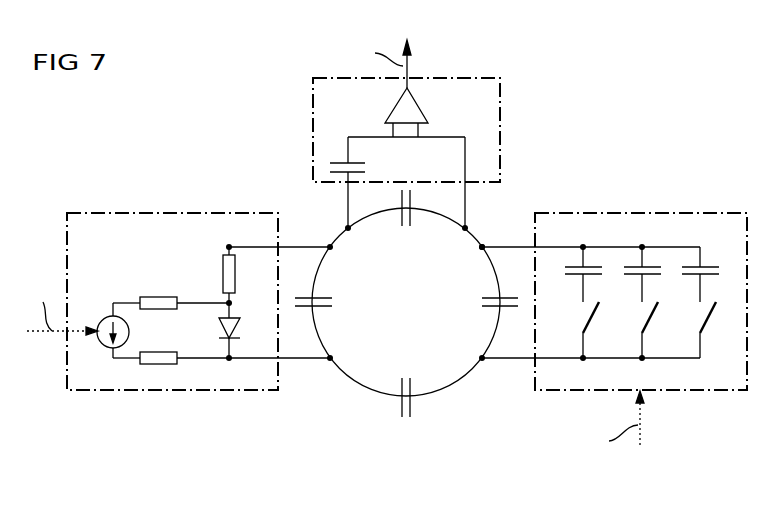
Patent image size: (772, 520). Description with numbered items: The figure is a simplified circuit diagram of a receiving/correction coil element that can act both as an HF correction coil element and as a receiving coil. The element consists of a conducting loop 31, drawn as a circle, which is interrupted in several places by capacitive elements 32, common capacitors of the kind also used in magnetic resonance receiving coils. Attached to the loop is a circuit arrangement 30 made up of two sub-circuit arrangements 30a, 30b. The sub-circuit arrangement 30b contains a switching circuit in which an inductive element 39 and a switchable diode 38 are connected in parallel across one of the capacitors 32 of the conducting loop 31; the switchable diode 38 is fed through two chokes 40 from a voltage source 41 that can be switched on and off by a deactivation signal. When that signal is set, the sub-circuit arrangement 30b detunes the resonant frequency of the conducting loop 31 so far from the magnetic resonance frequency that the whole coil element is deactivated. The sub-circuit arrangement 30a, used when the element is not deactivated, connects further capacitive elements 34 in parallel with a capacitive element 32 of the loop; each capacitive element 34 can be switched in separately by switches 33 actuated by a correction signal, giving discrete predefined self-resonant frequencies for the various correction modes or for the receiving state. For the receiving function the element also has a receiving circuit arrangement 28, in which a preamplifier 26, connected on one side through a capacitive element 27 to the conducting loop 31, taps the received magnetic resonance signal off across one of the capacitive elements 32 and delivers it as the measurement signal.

The preamplifier 26 is at (418, 98).
The capacitive element 27 is at (342, 160).
The receiving circuit arrangement 28 is at (503, 133).
The circuit arrangement 30 is at (464, 337).
The sub-circuit arrangement 30a is at (640, 212).
The sub-circuit arrangement 30b is at (170, 212).
The conducting loop 31 is at (482, 246).
The capacitive elements 32 is at (400, 217).
The switches 33 is at (595, 320).
The capacitive elements 34 is at (573, 277).
The switchable diode 38 is at (233, 320).
The inductive element 39 is at (223, 277).
The chokes 40 is at (157, 309).
The voltage source 41 is at (107, 315).